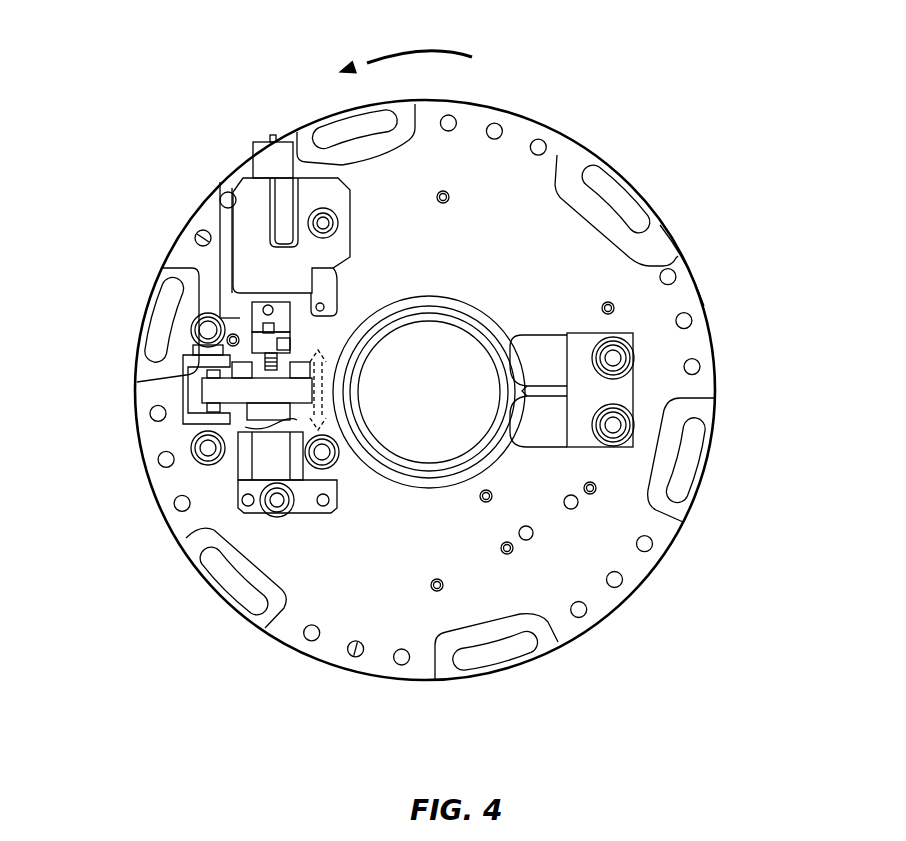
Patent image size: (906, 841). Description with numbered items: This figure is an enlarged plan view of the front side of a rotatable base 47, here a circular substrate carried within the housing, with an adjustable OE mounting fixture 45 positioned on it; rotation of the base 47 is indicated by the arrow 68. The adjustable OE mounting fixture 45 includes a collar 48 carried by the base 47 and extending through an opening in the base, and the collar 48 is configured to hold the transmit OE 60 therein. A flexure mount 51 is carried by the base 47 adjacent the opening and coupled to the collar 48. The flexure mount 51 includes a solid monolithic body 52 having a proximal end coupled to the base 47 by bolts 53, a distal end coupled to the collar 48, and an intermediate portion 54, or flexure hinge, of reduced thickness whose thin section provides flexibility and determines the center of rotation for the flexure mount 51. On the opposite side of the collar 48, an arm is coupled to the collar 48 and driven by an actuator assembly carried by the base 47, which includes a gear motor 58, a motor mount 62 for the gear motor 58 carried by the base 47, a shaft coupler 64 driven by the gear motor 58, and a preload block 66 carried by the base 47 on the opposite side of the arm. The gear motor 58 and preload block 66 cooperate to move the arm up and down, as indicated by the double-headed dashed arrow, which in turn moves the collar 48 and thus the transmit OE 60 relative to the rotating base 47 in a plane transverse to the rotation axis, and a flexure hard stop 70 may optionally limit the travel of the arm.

The adjustable OE mounting fixture 45 is at (126, 319).
The base 47 is at (683, 262).
The collar 48 is at (474, 320).
The flexure mount 51 is at (644, 365).
The solid monolithic body 52 is at (636, 396).
The bolts 53 is at (634, 446).
The intermediate portion 54 is at (523, 392).
The gear motor 58 is at (253, 140).
The transmit OE 60 is at (438, 405).
The motor mount 62 is at (236, 186).
The shaft coupler 64 is at (212, 268).
The preload block 66 is at (228, 500).
The arrow 68 is at (428, 50).
The flexure hard stop 70 is at (190, 425).